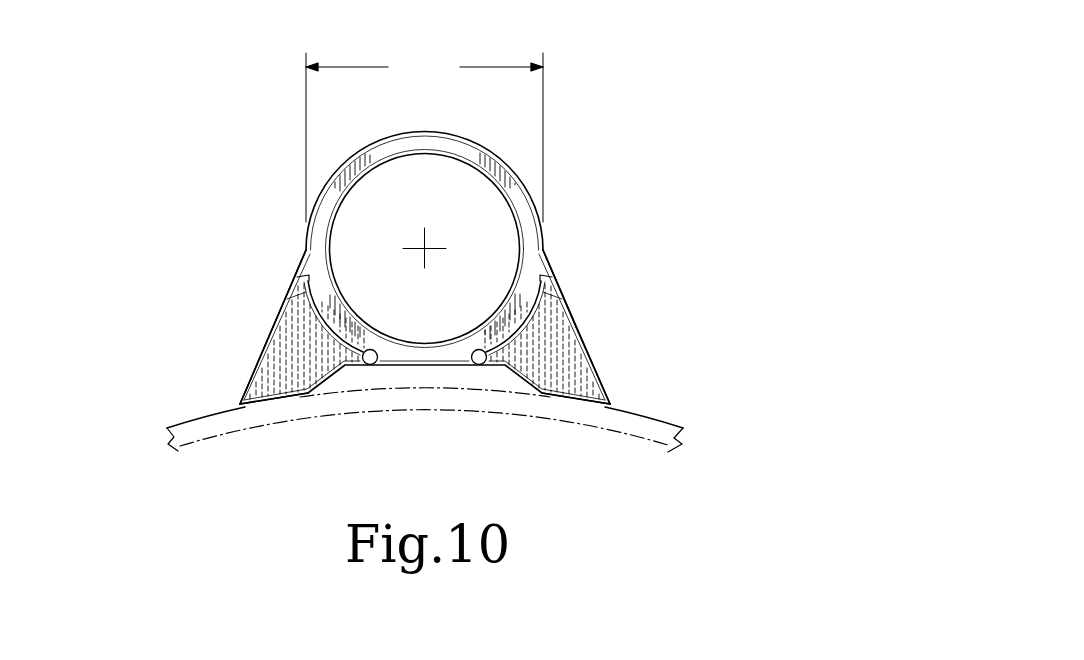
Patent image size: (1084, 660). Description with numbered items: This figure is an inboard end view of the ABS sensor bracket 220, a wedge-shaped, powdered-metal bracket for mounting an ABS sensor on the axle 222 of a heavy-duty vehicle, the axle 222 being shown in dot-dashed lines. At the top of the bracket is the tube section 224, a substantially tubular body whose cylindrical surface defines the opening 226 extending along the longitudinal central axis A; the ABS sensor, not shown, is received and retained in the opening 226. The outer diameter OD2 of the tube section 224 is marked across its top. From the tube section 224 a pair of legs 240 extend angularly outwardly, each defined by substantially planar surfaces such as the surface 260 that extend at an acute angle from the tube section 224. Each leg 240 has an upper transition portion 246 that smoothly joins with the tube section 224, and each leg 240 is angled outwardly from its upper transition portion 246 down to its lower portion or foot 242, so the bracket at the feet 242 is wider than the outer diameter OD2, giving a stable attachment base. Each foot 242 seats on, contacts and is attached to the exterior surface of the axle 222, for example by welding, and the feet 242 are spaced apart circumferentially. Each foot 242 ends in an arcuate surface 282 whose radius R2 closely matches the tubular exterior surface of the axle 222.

The ABS sensor bracket 220 is at (607, 157).
The axle 222 is at (233, 427).
The tube section 224 is at (412, 143).
The opening 226 is at (388, 158).
The legs 240 is at (311, 333).
The foot 242 is at (272, 388).
The upper transition portion 246 is at (304, 255).
The planar surface 260 is at (261, 348).
The arcuate surface 282 is at (288, 400).
The longitudinal central axis A is at (427, 246).
The outer diameter OD2 is at (424, 137).
The radius R2 is at (592, 418).